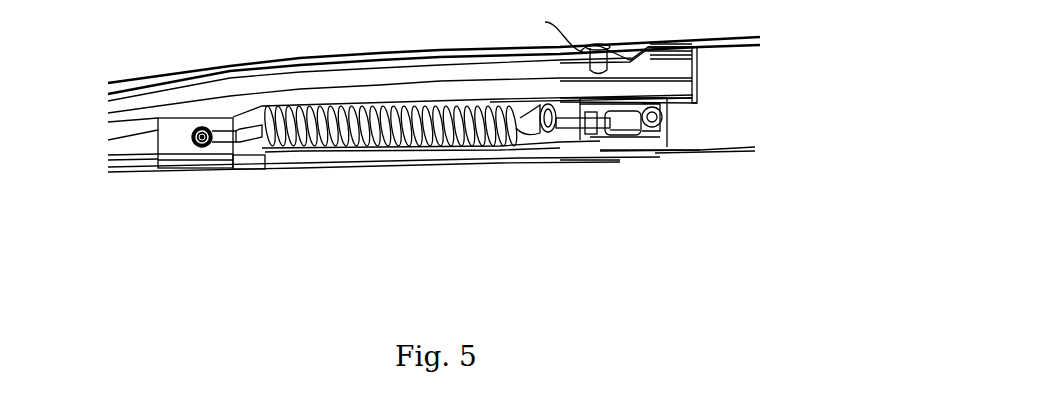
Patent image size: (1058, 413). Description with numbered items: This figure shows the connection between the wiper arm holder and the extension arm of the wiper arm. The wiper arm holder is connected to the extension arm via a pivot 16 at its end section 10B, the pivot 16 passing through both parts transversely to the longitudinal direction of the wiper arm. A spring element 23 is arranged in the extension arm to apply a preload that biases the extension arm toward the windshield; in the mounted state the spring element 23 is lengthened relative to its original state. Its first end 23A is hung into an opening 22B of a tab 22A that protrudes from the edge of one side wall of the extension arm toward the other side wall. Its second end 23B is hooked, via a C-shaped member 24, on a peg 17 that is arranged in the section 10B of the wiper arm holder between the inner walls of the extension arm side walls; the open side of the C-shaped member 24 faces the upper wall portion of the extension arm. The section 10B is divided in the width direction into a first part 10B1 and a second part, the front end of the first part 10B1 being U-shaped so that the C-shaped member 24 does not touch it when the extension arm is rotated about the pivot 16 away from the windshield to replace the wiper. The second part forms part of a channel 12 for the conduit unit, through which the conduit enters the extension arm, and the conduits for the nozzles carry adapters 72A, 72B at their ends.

The adapter 72A is at (273, 85).
The adapter 72B is at (365, 83).
The tab 22A is at (181, 148).
The opening 22B is at (224, 150).
The first end of the spring element 23A is at (248, 150).
The spring element 23 is at (384, 143).
The second end of the spring element 23B is at (531, 140).
The first part of the section 10B1 is at (570, 140).
The C-shaped member 24 is at (616, 132).
The section of the wiper arm holder 10B is at (654, 138).
The peg 17 is at (665, 108).
The pivot 16 is at (602, 42).
The channel 12 is at (677, 68).